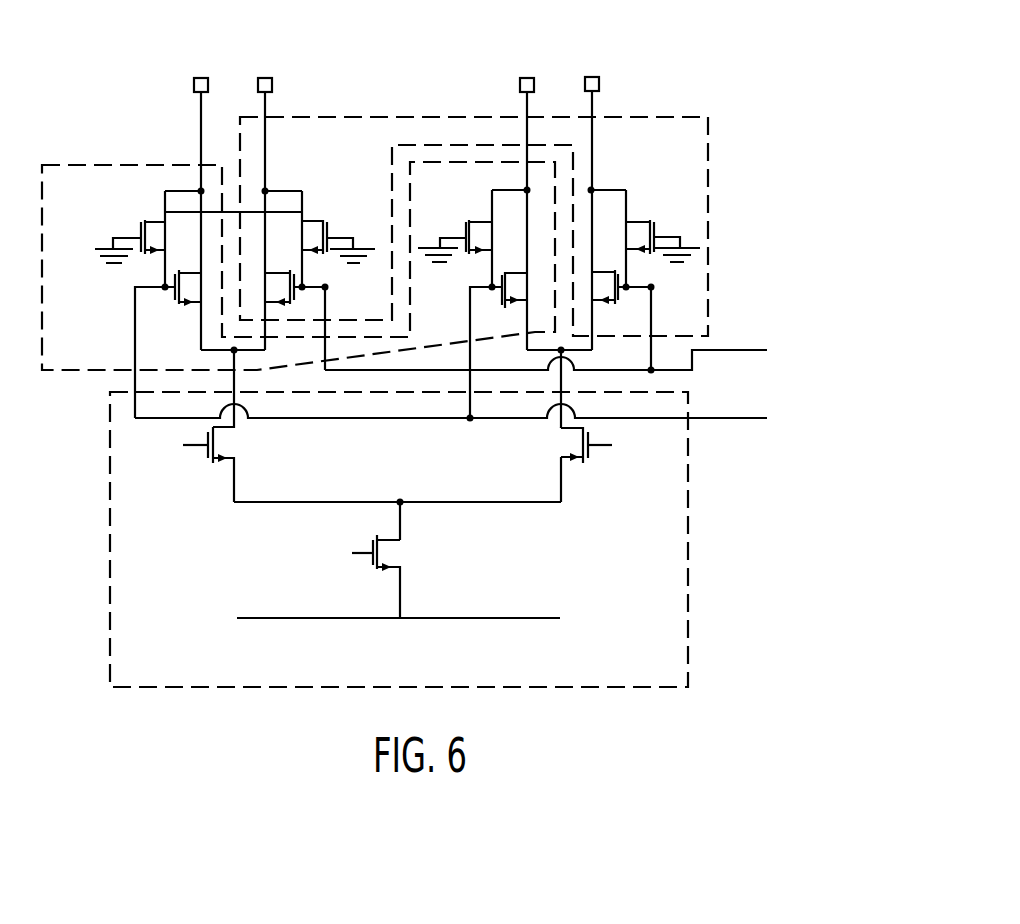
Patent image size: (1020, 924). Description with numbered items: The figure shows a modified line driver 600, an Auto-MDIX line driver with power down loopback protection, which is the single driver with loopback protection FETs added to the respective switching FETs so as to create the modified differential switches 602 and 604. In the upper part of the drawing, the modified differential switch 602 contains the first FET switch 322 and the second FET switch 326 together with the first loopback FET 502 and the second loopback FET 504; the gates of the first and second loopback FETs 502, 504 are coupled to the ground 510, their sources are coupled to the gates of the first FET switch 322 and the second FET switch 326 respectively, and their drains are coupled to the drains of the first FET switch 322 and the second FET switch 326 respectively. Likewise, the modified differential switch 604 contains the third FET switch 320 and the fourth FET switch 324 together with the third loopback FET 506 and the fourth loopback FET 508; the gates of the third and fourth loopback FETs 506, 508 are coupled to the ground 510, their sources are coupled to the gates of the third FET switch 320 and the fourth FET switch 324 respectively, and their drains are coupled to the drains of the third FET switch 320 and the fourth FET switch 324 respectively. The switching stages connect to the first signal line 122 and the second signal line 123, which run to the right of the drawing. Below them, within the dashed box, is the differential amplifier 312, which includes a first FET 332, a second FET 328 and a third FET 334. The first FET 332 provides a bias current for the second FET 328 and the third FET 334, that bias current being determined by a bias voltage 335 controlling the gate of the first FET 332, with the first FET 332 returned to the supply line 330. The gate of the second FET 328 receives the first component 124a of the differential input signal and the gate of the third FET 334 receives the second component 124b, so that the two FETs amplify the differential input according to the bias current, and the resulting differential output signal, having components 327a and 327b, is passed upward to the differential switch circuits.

The modified line driver 600 is at (686, 22).
The modified differential switch 602 is at (303, 118).
The modified differential switch 604 is at (42, 182).
The third loopback FET 506 is at (142, 222).
The first loopback FET 502 is at (328, 224).
The fourth loopback FET 508 is at (468, 217).
The second loopback FET 504 is at (654, 222).
The ground 510 is at (120, 265).
The third FET switch 320 is at (172, 292).
The first FET switch 322 is at (295, 293).
The fourth FET switch 324 is at (502, 300).
The second FET switch 326 is at (625, 300).
The first signal line 122 is at (568, 355).
The second signal line 123 is at (473, 417).
The differential amplifier 312 is at (688, 620).
The first component of the differential output signal 327a is at (237, 428).
The second component of the differential output signal 327b is at (559, 430).
The second FET 328 is at (223, 449).
The third FET 334 is at (560, 452).
The first component of the differential input signal 124a is at (199, 446).
The second component of the differential input signal 124b is at (600, 446).
The first FET 332 is at (390, 542).
The bias voltage 335 is at (352, 555).
The supply line 330 is at (265, 617).